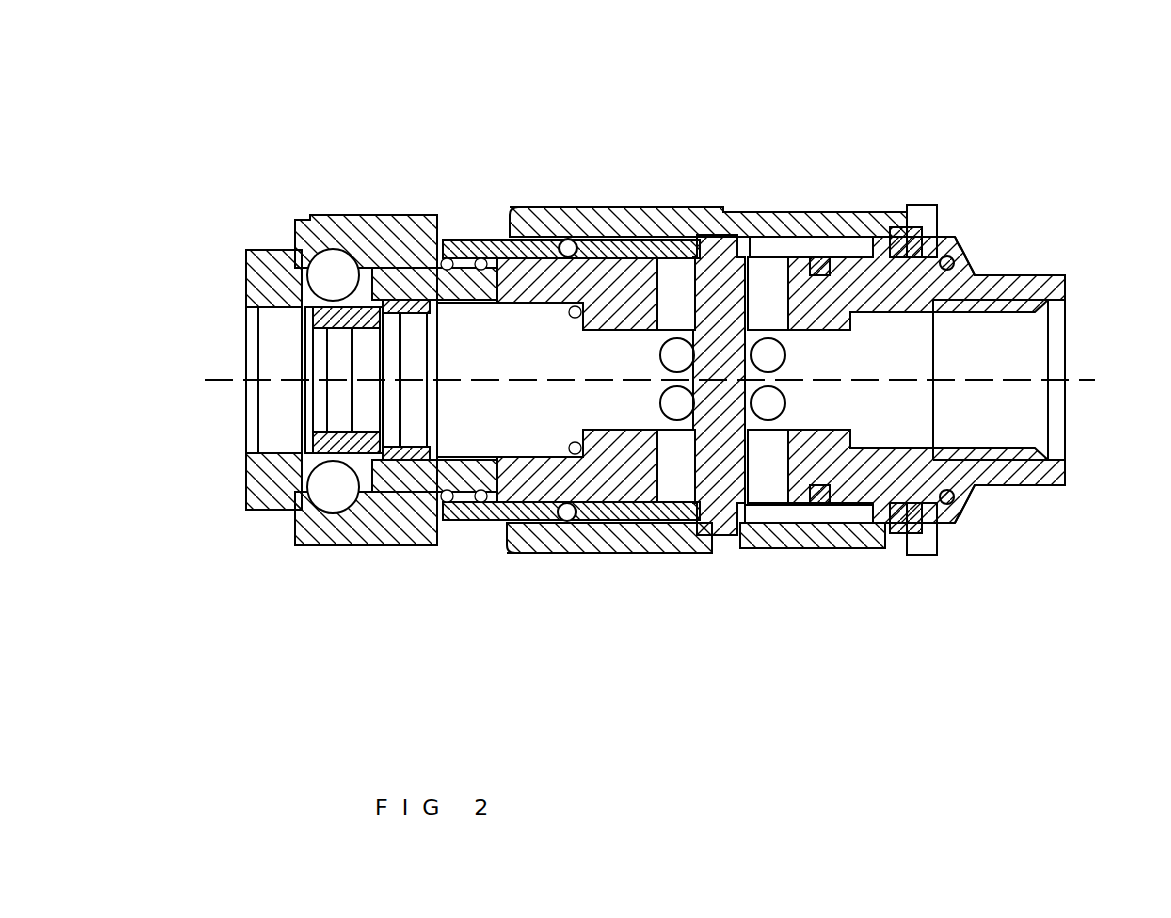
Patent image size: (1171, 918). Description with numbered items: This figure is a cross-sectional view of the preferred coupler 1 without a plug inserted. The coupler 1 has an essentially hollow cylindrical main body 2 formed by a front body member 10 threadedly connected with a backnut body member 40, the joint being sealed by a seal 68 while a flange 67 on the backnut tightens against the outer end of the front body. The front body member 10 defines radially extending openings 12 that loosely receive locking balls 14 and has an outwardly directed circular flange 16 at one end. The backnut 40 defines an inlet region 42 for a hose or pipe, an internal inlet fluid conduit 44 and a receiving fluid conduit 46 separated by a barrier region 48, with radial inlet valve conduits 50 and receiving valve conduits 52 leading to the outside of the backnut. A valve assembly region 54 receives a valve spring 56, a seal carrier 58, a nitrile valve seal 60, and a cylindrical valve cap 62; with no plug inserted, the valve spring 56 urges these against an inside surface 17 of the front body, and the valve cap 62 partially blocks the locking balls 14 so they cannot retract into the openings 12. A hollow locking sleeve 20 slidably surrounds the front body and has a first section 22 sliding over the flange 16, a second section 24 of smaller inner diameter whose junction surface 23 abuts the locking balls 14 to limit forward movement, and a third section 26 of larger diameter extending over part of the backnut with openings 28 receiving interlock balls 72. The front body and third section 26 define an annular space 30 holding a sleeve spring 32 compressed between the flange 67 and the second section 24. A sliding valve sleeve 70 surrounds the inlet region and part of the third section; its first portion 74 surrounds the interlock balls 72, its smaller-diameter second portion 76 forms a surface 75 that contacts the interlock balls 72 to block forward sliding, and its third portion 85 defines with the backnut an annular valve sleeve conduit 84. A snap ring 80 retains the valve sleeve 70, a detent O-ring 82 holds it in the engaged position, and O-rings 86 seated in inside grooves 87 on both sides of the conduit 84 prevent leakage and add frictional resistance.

The coupler 1 is at (830, 52).
The main body 2 is at (1030, 232).
The front body member 10 is at (233, 515).
The radially extending openings 12 is at (305, 320).
The locking balls 14 is at (345, 288).
The circular flange 16 is at (267, 518).
The inside surface 17 is at (298, 452).
The locking sleeve 20 is at (356, 548).
The first section 22 is at (313, 204).
The surface 23 is at (292, 244).
The second section 24 is at (388, 204).
The third section 26 is at (485, 203).
The openings 28 is at (546, 206).
The annular space 30 is at (462, 236).
The sleeve spring 32 is at (474, 226).
The backnut body member 40 is at (962, 512).
The inlet region 42 is at (1035, 413).
The inlet fluid conduit 44 is at (834, 416).
The receiving fluid conduit 46 is at (636, 416).
The barrier region 48 is at (717, 350).
The inlet valve conduits 50 is at (780, 309).
The receiving valve conduits 52 is at (688, 309).
The valve assembly region 54 is at (490, 370).
The valve spring 56 is at (567, 448).
The seal carrier 58 is at (416, 446).
The valve seal 60 is at (346, 430).
The valve cap 62 is at (344, 333).
The flange 67 is at (494, 516).
The seal 68 is at (482, 271).
The sliding valve sleeve 70 is at (773, 236).
The interlock balls 72 is at (574, 242).
The first portion 74 is at (545, 568).
The surface 75 is at (569, 522).
The second portion 76 is at (638, 577).
The snap ring 80 is at (950, 256).
The detent O-ring 82 is at (825, 257).
The valve sleeve conduit 84 is at (800, 553).
The third portion 85 is at (772, 584).
The O-rings 86 is at (717, 555).
The inside grooves 87 is at (716, 232).